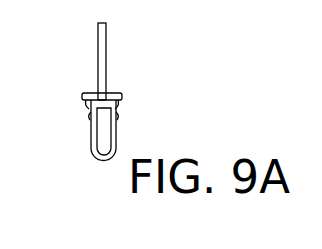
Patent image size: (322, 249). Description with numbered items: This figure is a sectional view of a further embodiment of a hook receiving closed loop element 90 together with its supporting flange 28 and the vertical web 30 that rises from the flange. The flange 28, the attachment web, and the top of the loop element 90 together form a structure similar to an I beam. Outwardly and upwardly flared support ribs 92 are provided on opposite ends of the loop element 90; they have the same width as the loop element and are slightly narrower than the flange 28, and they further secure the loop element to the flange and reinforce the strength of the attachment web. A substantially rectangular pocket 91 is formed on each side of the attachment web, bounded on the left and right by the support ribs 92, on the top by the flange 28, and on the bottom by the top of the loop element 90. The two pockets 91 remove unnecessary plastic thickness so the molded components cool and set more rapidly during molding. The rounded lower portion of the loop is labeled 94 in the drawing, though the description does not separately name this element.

The hook receiving closed loop element 90 is at (74, 91).
The vertical web 30 is at (107, 35).
The flange 28 is at (123, 96).
The pocket 91 is at (87, 101).
The support rib 92 is at (87, 123).
The loop 94 is at (105, 162).